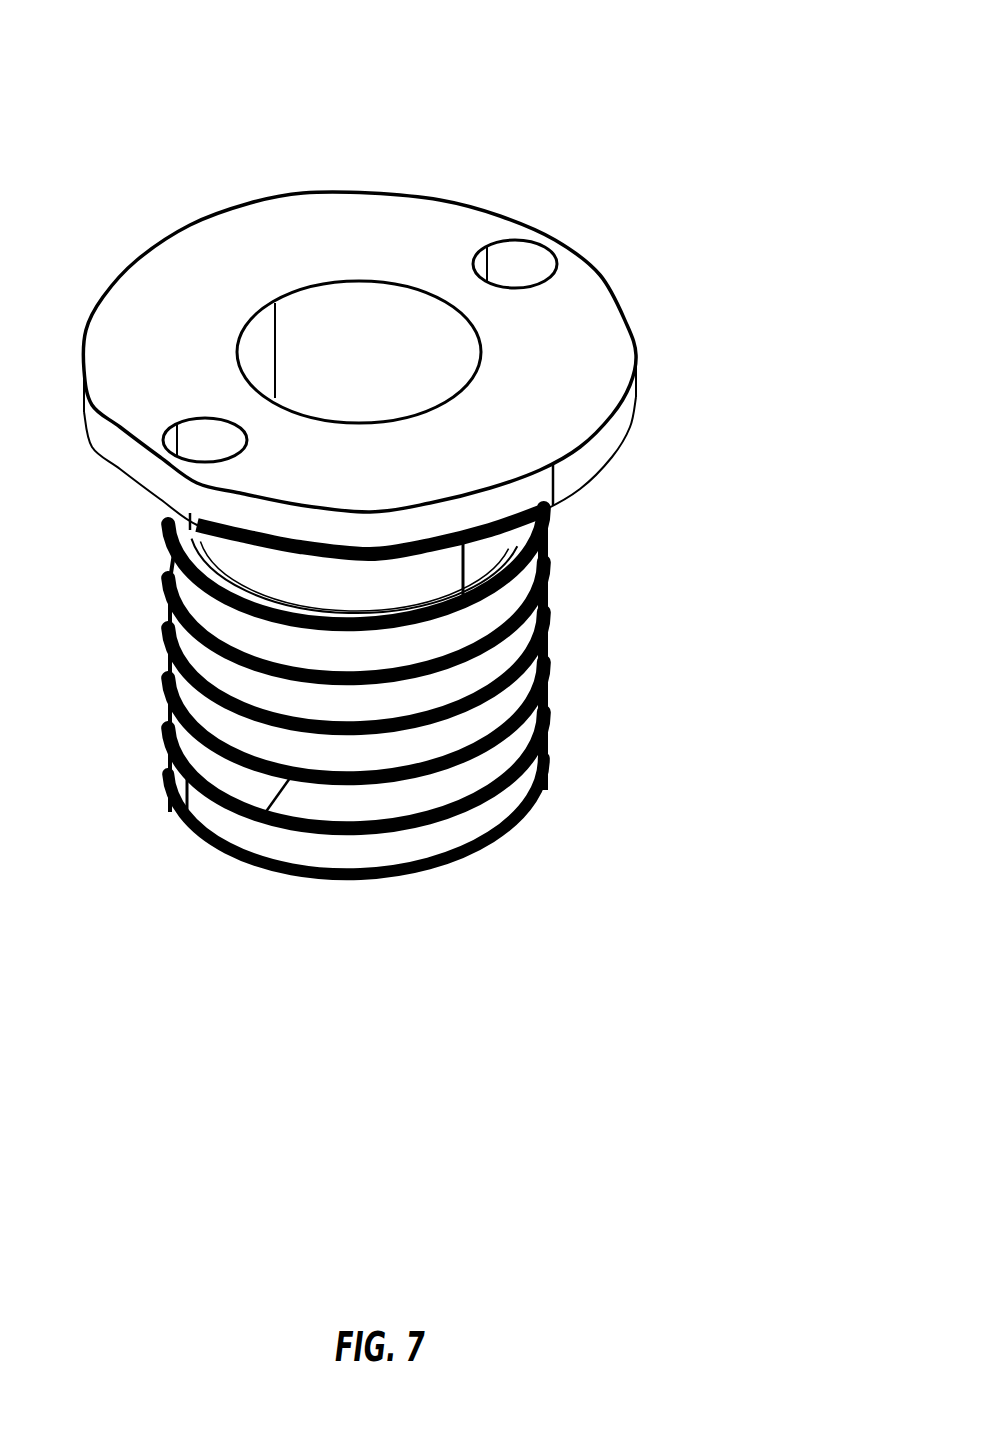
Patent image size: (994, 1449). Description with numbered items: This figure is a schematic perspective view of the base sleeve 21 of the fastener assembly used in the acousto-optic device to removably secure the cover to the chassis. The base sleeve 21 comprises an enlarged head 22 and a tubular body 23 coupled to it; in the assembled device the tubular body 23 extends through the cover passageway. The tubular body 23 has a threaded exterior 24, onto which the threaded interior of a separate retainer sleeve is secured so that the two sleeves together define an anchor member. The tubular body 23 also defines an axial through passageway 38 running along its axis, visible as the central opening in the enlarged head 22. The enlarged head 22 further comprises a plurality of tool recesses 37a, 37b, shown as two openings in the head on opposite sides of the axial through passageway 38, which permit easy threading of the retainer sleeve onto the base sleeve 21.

The base sleeve 21 is at (434, 437).
The enlarged head 22 is at (332, 310).
The tubular body 23 is at (468, 691).
The threaded exterior 24 is at (465, 763).
The tool recess 37a is at (212, 433).
The tool recess 37b is at (510, 255).
The axial through passageway 38 is at (383, 350).